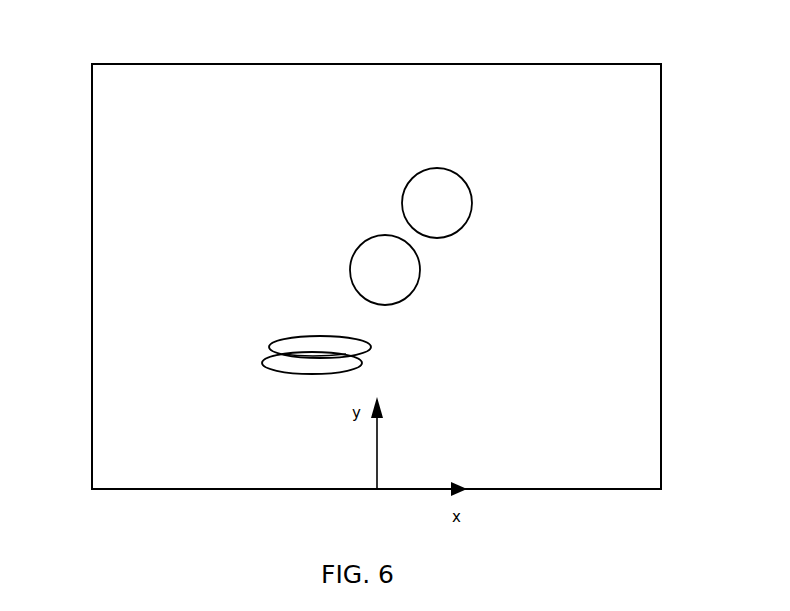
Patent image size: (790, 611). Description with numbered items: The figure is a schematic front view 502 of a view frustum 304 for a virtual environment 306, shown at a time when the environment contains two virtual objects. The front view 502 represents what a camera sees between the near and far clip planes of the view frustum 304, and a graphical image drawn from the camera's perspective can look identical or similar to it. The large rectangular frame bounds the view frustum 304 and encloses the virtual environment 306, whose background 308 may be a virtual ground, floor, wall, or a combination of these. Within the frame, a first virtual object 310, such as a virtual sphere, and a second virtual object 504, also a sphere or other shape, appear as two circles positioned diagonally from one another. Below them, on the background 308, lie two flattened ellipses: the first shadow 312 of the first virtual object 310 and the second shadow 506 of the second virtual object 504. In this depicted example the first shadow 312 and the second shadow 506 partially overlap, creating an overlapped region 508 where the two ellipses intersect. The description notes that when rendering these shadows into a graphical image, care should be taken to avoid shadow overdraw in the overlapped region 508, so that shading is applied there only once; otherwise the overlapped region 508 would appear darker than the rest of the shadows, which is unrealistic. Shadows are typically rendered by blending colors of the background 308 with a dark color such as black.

The front view 502 is at (694, 73).
The view frustum 304 is at (92, 300).
The virtual environment 306 is at (44, 164).
The background 308 is at (583, 135).
The second virtual object 504 is at (472, 208).
The first virtual object 310 is at (351, 260).
The second shadow 506 is at (370, 342).
The overlapped region 508 is at (310, 353).
The first shadow 312 is at (283, 375).